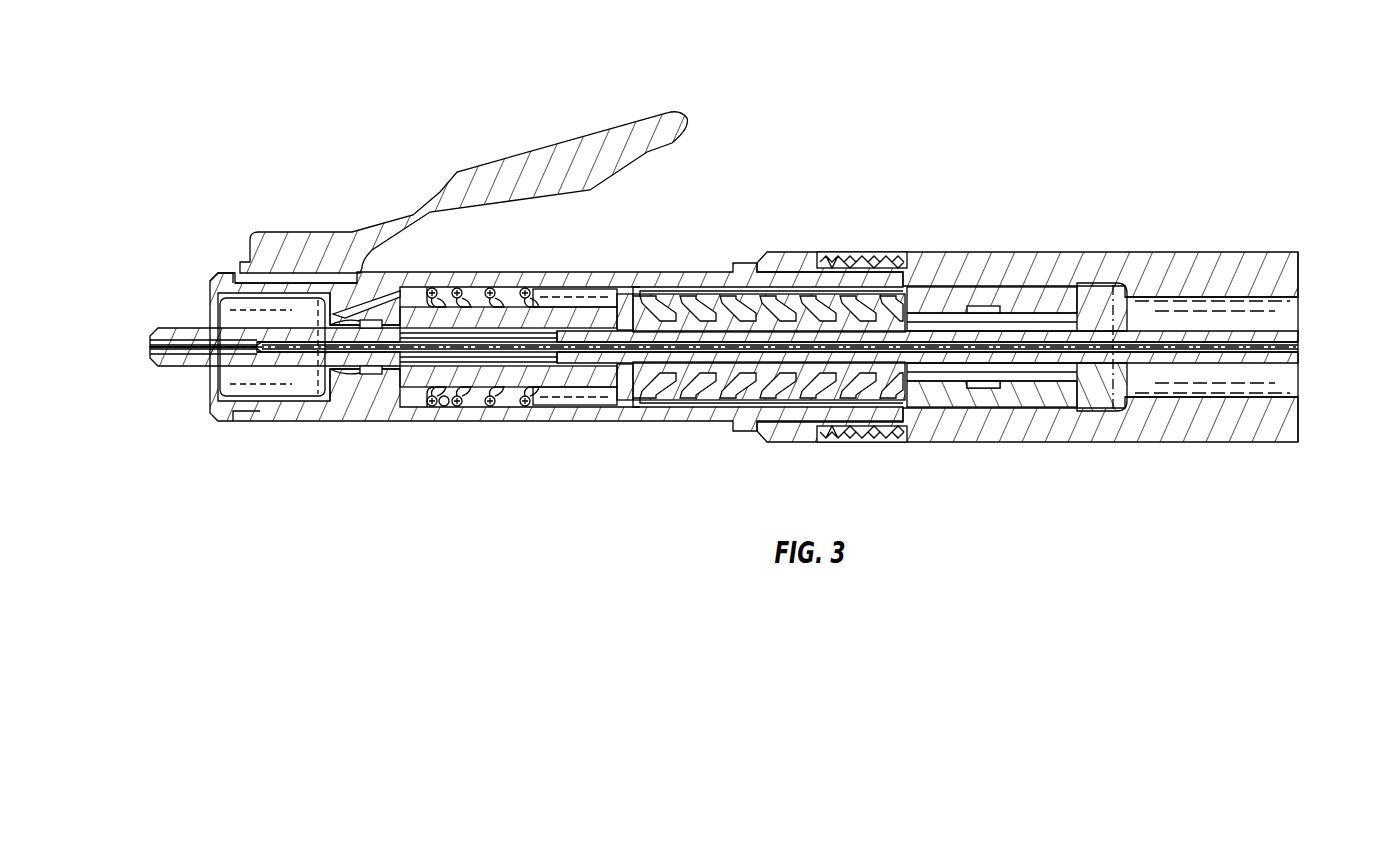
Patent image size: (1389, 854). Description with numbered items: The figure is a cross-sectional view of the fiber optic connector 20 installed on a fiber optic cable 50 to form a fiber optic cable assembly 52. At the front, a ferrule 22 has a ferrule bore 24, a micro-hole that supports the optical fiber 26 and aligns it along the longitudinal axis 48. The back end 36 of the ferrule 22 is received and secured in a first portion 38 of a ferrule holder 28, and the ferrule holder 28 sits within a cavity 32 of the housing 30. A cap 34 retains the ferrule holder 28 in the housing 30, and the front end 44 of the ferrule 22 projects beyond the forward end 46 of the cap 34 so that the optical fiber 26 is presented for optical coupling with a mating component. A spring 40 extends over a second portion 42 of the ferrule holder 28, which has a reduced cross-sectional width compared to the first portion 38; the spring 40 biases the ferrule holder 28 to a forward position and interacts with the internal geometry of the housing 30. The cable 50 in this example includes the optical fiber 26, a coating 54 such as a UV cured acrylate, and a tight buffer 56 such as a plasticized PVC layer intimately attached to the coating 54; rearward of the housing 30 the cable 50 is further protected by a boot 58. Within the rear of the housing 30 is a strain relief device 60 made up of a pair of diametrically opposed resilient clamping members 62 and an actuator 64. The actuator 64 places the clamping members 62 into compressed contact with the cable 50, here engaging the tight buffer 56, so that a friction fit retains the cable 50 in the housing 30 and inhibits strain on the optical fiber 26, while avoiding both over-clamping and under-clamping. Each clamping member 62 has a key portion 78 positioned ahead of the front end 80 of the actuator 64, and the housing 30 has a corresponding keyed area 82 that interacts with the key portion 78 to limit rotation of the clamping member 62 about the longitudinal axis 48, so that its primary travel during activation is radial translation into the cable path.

The connector 20 is at (420, 86).
The ferrule 22 is at (173, 327).
The ferrule bore 24 is at (152, 350).
The optical fiber 26 is at (290, 352).
The ferrule holder 28 is at (415, 380).
The housing 30 is at (490, 423).
The cavity 32 is at (590, 400).
The cap 34 is at (226, 422).
The back end 36 is at (400, 300).
The first portion 38 is at (370, 393).
The spring 40 is at (440, 406).
The second portion 42 is at (545, 320).
The front end 44 is at (152, 328).
The forward end 46 is at (200, 272).
The longitudinal axis 48 is at (1345, 347).
The fiber optic cable 50 is at (1310, 339).
The fiber optic cable assembly 52 is at (1050, 209).
The coating 54 is at (497, 340).
The tight buffer 56 is at (933, 363).
The boot 58 is at (1108, 445).
The strain relief device 60 is at (708, 432).
The clamping member 62 is at (720, 318).
The actuator 64 is at (1005, 395).
The key portion 78 is at (628, 424).
The front end 80 is at (645, 300).
The keyed area 82 is at (632, 395).